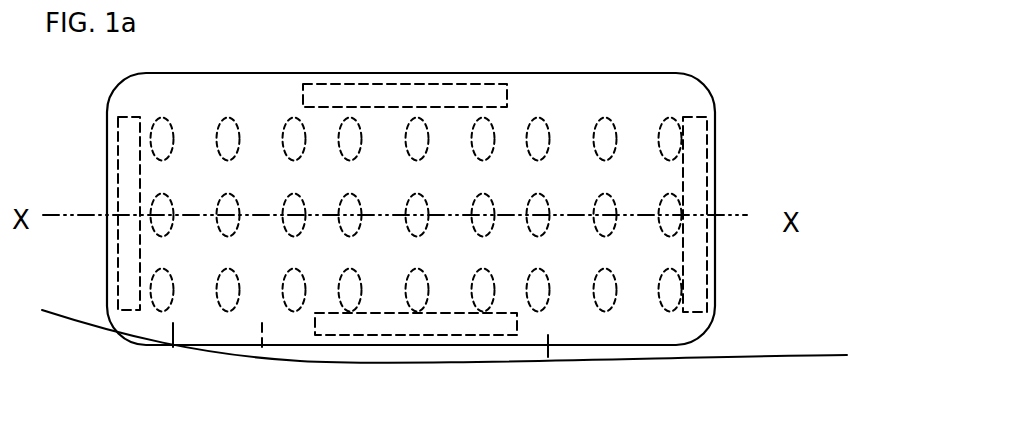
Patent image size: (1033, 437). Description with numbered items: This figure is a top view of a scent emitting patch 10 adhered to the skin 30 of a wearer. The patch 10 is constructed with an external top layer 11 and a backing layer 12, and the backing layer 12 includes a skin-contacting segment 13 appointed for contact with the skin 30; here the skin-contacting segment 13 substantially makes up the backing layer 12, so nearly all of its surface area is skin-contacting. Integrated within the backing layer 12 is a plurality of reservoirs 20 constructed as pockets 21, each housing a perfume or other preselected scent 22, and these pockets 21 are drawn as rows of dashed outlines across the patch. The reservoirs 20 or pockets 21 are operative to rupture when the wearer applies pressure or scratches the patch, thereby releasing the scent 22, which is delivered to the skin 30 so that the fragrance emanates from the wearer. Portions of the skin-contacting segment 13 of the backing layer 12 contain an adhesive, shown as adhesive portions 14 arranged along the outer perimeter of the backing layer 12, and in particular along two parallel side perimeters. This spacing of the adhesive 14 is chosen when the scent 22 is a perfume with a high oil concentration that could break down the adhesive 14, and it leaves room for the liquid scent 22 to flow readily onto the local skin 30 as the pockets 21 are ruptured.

The scent emitting patch 10 is at (653, 340).
The external top layer 11 is at (548, 357).
The backing layer 12 is at (262, 350).
The skin-contacting segment 13 is at (173, 347).
The adhesive portions 14 is at (428, 90).
The reservoir 20 is at (160, 148).
The pockets 21 is at (162, 122).
The scent 22 is at (290, 137).
The skin 30 is at (805, 313).